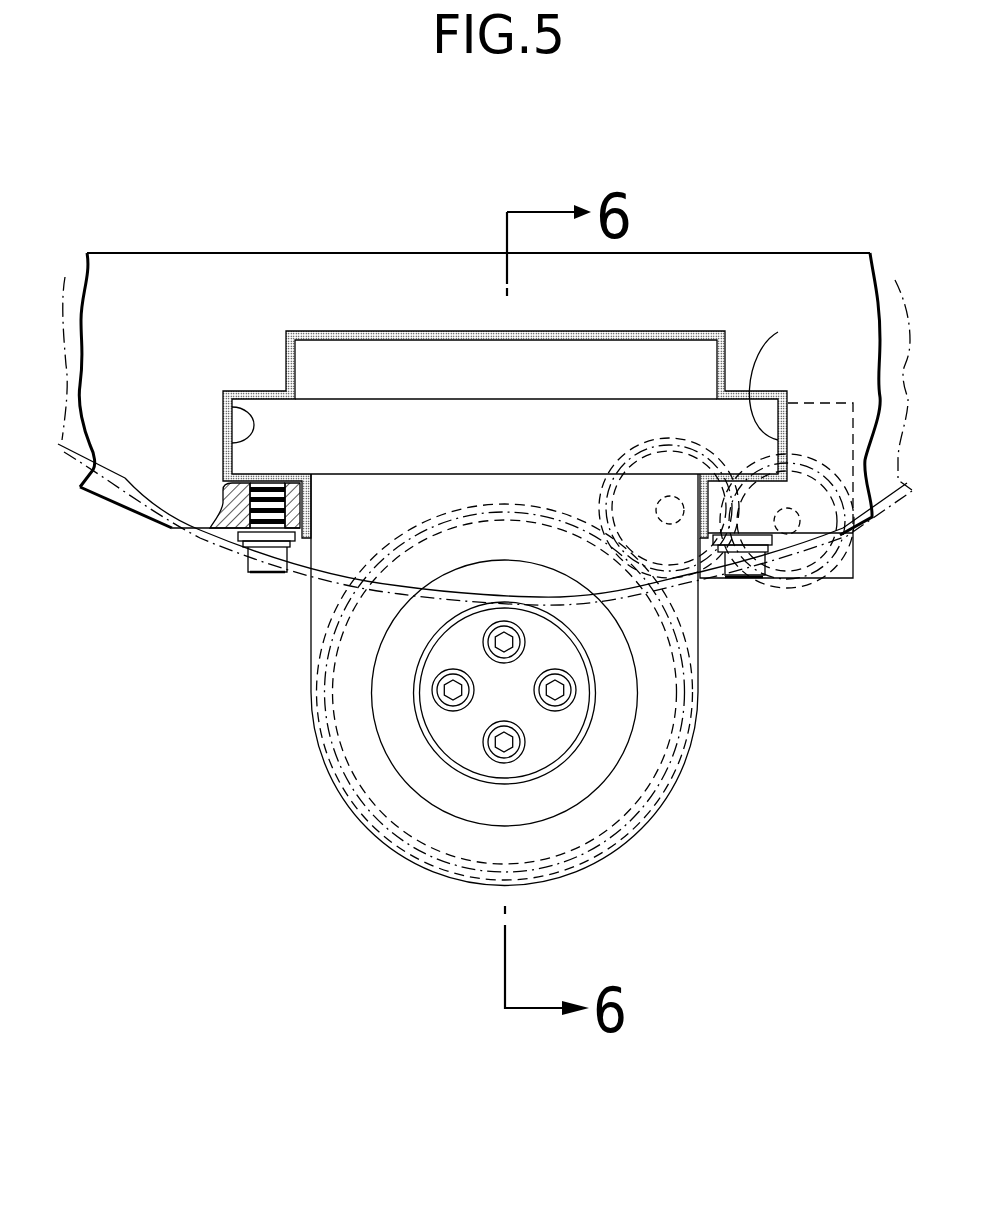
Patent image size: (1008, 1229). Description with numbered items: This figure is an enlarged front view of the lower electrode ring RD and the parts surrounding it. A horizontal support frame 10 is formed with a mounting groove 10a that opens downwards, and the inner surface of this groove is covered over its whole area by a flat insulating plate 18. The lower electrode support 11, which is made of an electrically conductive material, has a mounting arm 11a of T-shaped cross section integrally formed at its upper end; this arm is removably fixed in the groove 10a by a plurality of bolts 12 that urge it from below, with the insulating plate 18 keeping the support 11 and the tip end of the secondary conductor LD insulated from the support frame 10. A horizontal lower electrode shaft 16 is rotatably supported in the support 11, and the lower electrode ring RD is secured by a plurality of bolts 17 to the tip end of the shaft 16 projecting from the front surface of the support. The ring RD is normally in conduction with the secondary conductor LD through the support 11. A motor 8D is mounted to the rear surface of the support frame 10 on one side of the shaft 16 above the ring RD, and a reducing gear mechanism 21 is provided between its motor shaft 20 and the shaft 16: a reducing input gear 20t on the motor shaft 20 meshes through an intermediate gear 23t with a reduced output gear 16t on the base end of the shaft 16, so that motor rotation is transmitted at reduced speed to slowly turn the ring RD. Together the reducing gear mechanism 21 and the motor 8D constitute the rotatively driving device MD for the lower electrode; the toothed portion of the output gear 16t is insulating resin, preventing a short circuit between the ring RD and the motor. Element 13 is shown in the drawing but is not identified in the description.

The support frame 10 is at (145, 517).
The mounting groove 10a is at (232, 412).
The lower electrode support 11 is at (617, 855).
The mounting arm 11a is at (680, 415).
The bolts 12 is at (255, 573).
The bracket wall 13 is at (548, 362).
The lower electrode shaft 16 is at (465, 635).
The reduced output gear 16t is at (316, 622).
The bolts 17 is at (497, 757).
The insulating plate 18 is at (317, 331).
The motor shaft 20 is at (806, 580).
The reducing input gear 20t is at (858, 555).
The reducing gear mechanism 21 is at (575, 500).
The intermediate gear 23t is at (600, 442).
The motor 8D is at (841, 404).
The secondary conductor LD is at (472, 358).
The lower electrode ring RD is at (563, 733).
The rotatively driving device MD is at (726, 676).